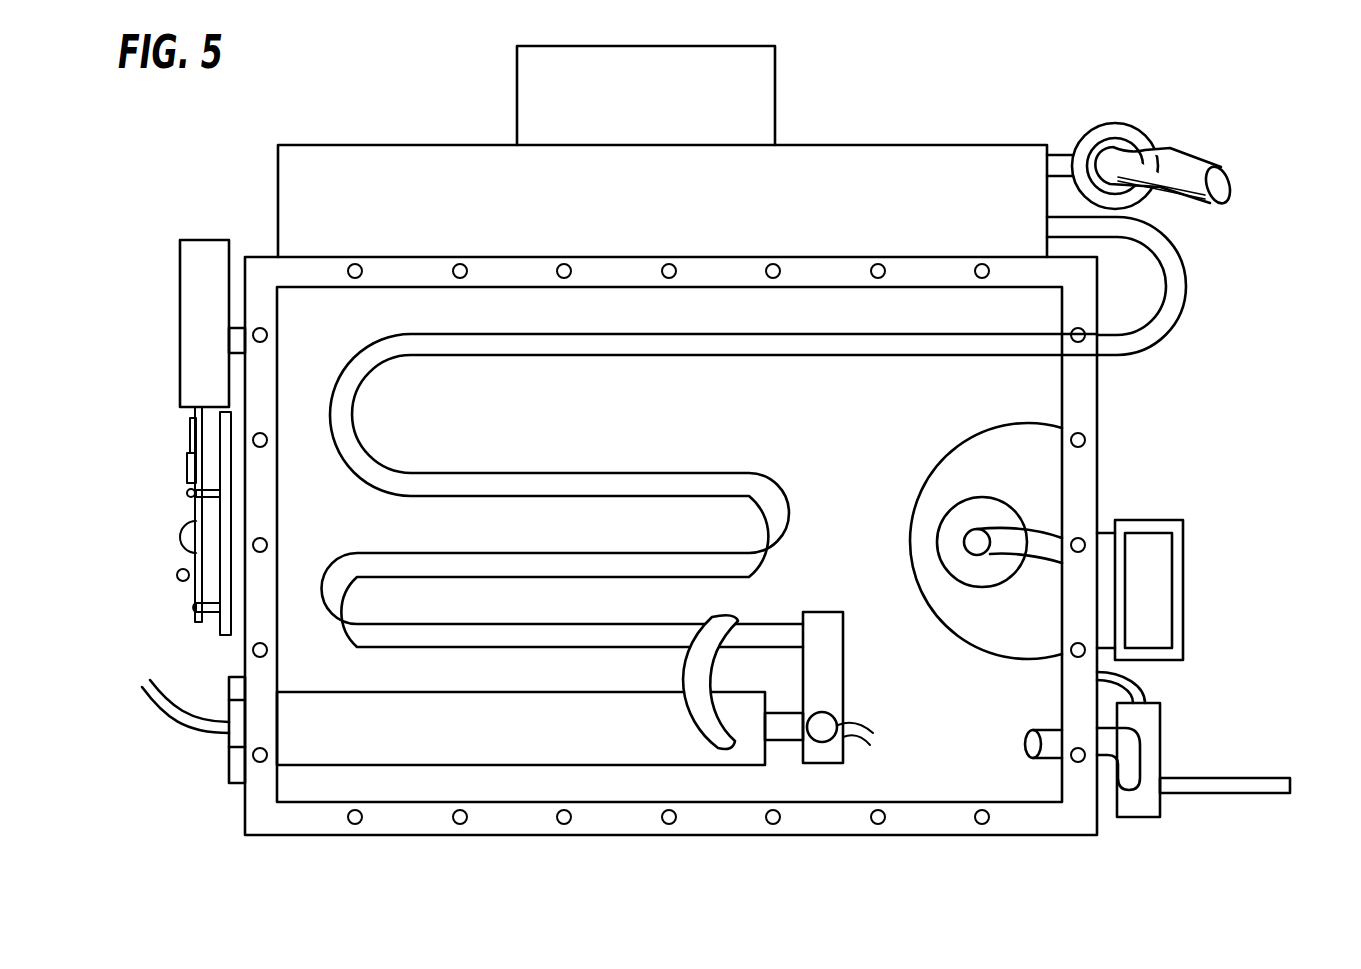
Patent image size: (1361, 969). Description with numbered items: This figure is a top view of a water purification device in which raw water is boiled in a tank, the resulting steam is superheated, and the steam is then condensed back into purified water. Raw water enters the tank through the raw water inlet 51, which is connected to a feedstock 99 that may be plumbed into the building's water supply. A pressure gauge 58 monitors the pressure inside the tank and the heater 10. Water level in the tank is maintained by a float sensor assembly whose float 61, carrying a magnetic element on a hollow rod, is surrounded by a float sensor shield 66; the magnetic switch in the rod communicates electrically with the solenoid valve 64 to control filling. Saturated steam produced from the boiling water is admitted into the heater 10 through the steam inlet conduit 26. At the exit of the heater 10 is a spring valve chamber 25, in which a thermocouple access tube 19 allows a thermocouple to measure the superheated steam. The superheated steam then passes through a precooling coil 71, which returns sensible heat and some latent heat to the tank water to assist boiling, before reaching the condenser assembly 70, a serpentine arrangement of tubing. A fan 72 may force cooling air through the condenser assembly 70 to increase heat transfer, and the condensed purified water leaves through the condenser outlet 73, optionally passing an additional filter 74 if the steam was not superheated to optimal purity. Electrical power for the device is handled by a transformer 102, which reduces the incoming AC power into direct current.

The heater 10 is at (415, 770).
The thermocouple access tube 19 is at (843, 763).
The spring valve chamber 25 is at (826, 650).
The steam inlet conduit 26 is at (725, 618).
The raw water inlet 51 is at (1040, 728).
The pressure gauge 58 is at (203, 266).
The float 61 is at (948, 540).
The solenoid valve 64 is at (1145, 728).
The float sensor shield 66 is at (957, 450).
The condenser assembly 70 is at (662, 201).
The precooling coil 71 is at (583, 347).
The fan 72 is at (646, 95).
The condenser outlet 73 is at (1060, 157).
The additional filter 74 is at (1116, 125).
The feedstock 99 is at (1297, 786).
The transformer 102 is at (1155, 596).